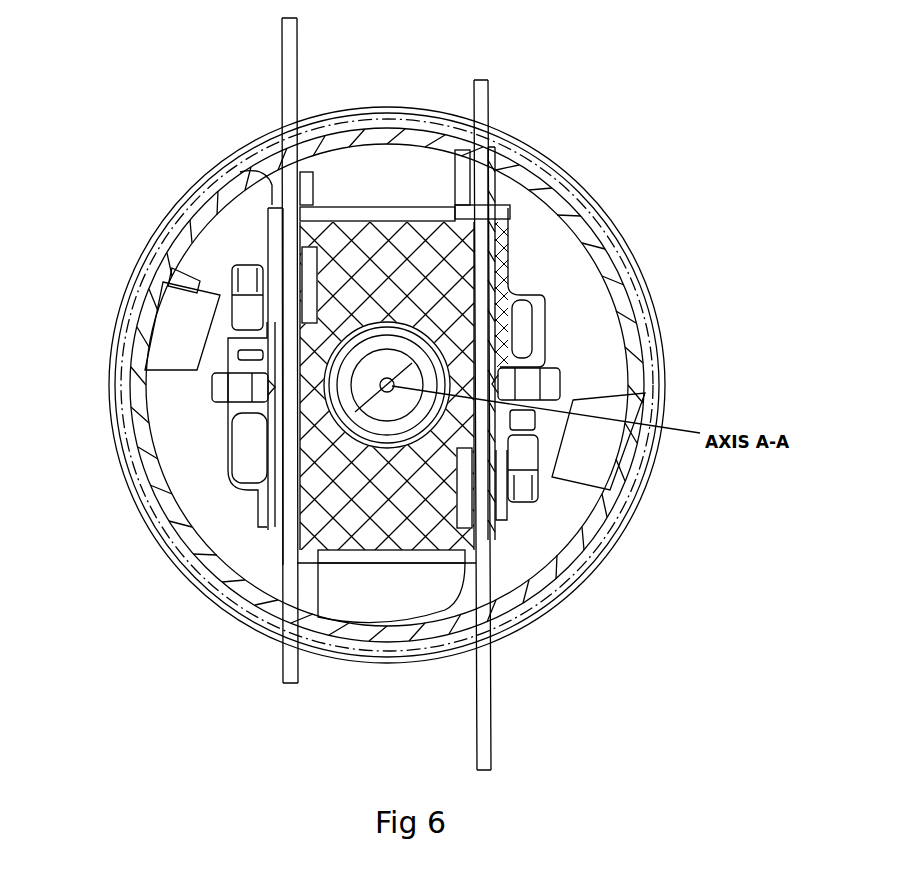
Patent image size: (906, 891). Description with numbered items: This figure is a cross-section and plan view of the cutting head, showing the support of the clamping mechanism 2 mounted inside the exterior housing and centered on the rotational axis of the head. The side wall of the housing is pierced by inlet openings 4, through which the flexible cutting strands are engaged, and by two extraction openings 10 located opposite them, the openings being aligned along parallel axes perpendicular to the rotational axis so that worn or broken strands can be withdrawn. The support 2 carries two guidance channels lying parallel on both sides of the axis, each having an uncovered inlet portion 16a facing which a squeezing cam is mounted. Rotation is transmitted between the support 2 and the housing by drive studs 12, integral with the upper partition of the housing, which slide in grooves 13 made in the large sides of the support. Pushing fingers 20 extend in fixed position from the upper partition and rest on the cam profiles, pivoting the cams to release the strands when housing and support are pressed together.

The support of the clamping mechanism 2 is at (335, 470).
The inlet openings 4 is at (273, 172).
The extraction openings 10 is at (488, 150).
The drive studs 12 is at (215, 390).
The grooves 13 is at (540, 360).
The inlet portion 16a is at (510, 515).
The pushing fingers 20 is at (248, 320).